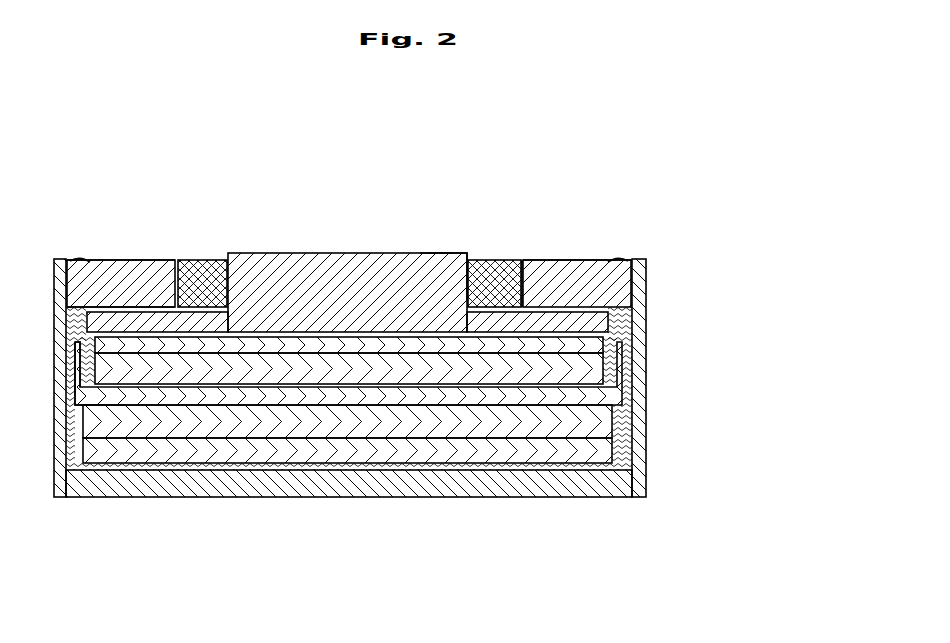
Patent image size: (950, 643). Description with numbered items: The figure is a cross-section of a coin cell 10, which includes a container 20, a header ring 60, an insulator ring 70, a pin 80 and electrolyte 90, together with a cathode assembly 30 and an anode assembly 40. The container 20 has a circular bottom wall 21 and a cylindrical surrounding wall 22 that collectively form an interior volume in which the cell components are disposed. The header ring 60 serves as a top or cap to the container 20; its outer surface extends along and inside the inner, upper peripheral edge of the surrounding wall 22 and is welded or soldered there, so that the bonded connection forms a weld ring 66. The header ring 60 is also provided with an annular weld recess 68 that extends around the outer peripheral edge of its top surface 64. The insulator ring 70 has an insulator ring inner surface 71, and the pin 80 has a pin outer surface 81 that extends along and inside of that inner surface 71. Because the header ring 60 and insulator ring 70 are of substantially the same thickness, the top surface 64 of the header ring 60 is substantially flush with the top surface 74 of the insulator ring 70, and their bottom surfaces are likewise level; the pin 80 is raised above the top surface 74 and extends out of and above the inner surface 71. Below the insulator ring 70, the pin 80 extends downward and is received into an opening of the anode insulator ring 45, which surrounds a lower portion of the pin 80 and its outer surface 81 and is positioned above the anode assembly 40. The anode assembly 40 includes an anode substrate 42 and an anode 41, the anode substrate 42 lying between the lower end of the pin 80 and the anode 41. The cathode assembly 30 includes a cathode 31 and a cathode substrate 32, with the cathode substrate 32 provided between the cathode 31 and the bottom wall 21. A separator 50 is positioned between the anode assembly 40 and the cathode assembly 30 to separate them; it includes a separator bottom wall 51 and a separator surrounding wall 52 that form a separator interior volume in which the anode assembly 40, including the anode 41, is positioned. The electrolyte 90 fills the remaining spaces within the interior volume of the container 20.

The coin cell 10 is at (311, 158).
The container 20 is at (443, 441).
The bottom wall 21 is at (403, 487).
The surrounding wall 22 is at (646, 455).
The cathode assembly 30 is at (508, 484).
The cathode 31 is at (600, 422).
The cathode substrate 32 is at (600, 450).
The anode assembly 40 is at (513, 328).
The anode 41 is at (600, 376).
The anode substrate 42 is at (600, 342).
The anode insulator ring 45 is at (646, 312).
The separator 50 is at (463, 414).
The separator bottom wall 51 is at (72, 404).
The separator surrounding wall 52 is at (72, 370).
The header ring 60 is at (397, 233).
The top surface 64 is at (607, 259).
The weld ring 66 is at (85, 259).
The weld recess 68 is at (82, 291).
The insulator ring 70 is at (474, 185).
The insulator ring inner surface 71 is at (439, 255).
The top surface 74 is at (517, 250).
The pin 80 is at (372, 218).
The pin outer surface 81 is at (468, 253).
The electrolyte 90 is at (73, 466).